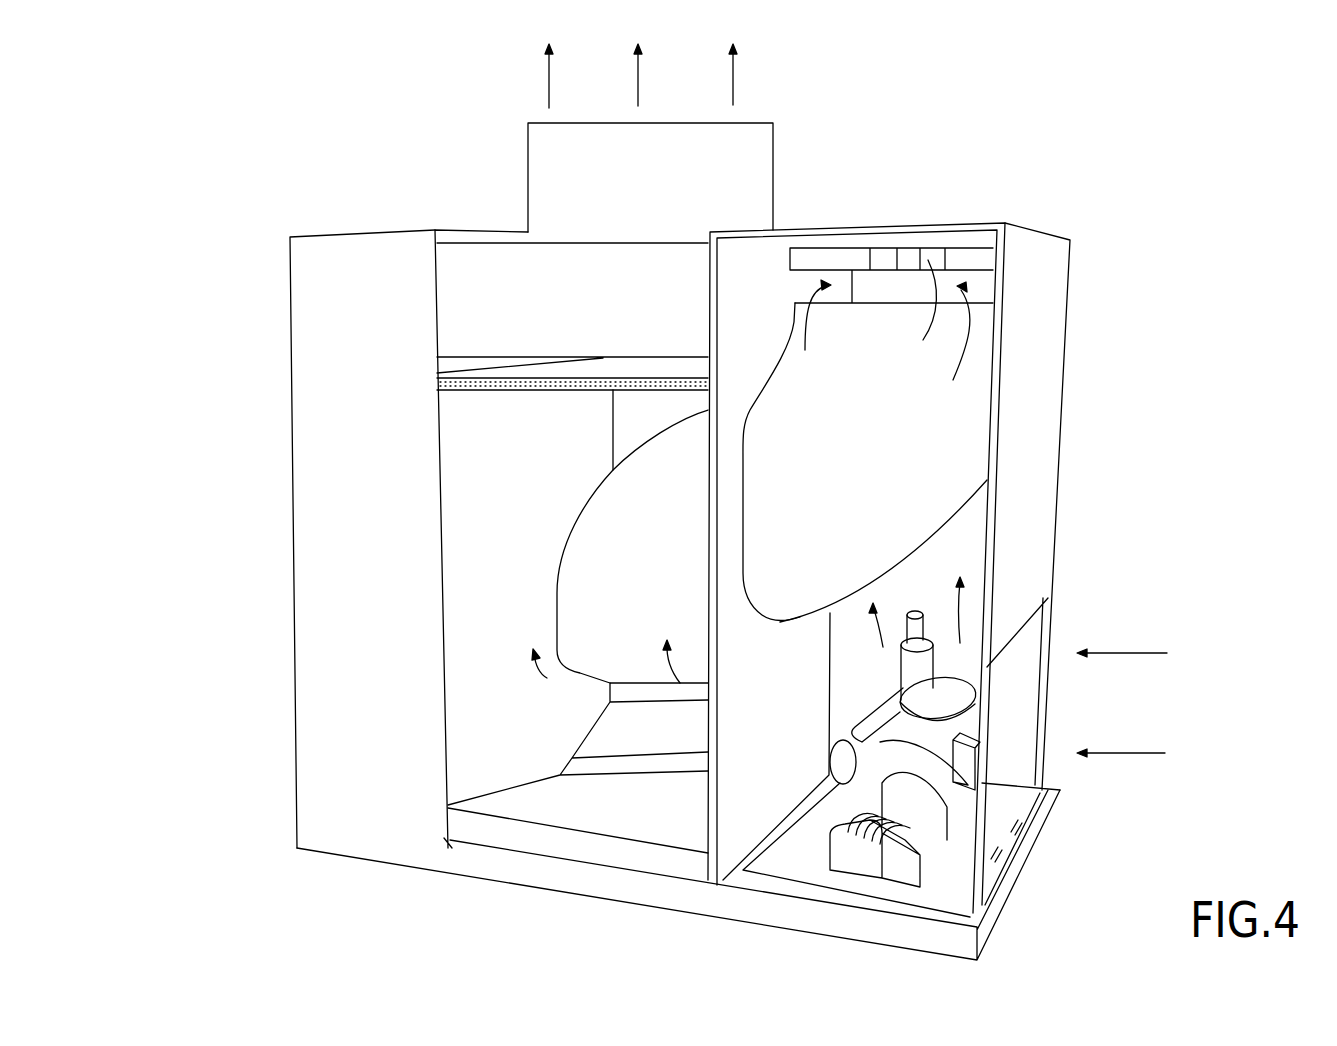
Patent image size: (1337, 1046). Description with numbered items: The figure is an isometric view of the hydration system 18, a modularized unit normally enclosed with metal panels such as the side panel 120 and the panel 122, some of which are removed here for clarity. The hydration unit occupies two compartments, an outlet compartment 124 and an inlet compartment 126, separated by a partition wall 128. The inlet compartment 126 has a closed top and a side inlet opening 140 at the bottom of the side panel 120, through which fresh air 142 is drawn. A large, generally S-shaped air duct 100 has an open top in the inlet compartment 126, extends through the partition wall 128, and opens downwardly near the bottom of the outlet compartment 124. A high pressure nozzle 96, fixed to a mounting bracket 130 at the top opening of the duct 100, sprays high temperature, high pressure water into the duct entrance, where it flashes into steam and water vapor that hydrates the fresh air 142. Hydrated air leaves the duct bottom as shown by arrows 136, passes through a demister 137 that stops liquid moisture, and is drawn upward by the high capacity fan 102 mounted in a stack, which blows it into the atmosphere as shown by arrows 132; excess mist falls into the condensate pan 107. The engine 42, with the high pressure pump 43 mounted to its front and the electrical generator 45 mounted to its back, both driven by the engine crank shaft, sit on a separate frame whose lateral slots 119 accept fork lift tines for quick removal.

The hydration system 18 is at (1297, 272).
The engine 42 is at (1000, 705).
The high pressure pump 43 is at (838, 842).
The electrical generator 45 is at (902, 676).
The high pressure nozzle 96 is at (887, 320).
The air duct 100 is at (865, 462).
The fan 102 is at (760, 185).
The condensate pan 107 is at (543, 800).
The lateral slots 119 is at (1002, 860).
The side panel 120 is at (1043, 420).
The panel 122 is at (310, 437).
The outlet compartment 124 is at (458, 452).
The inlet compartment 126 is at (968, 539).
The partition wall 128 is at (846, 747).
The mounting bracket 130 is at (805, 263).
The arrows 132 is at (735, 80).
The arrows 136 is at (585, 680).
The demister 137 is at (555, 390).
The side inlet opening 140 is at (1050, 638).
The fresh air 142 is at (1147, 753).